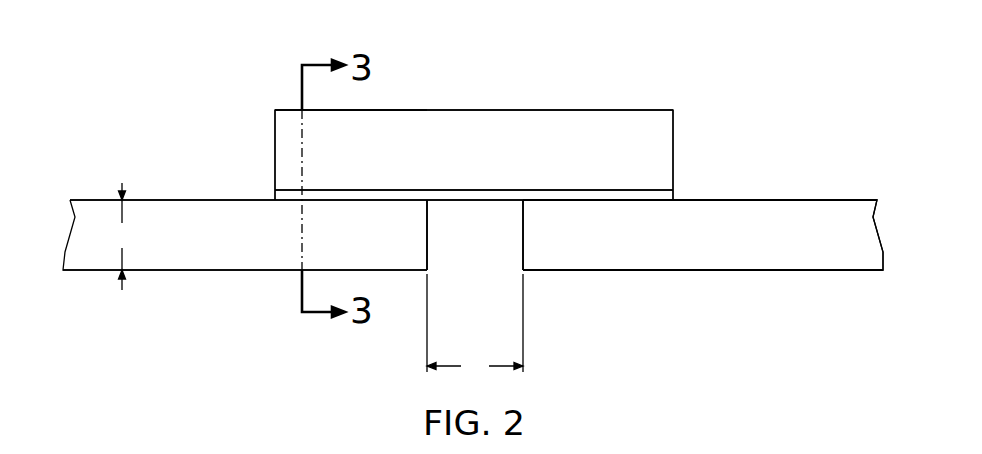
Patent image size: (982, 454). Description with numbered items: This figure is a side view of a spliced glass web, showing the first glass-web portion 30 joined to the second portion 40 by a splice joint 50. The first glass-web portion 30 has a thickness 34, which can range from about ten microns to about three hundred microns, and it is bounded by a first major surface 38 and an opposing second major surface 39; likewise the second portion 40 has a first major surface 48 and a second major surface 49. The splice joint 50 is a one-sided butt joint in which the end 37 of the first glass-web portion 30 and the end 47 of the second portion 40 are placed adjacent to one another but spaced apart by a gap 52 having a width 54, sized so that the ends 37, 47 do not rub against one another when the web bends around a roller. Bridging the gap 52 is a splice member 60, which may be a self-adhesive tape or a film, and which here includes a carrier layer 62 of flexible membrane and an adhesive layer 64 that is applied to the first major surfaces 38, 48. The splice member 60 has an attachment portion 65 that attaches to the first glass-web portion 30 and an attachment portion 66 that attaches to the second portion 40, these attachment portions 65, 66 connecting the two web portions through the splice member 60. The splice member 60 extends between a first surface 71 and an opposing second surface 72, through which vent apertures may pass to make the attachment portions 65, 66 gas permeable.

The first glass-web portion 30 is at (90, 200).
The thickness 34 is at (123, 236).
The end 37 is at (428, 246).
The first major surface 38 is at (163, 200).
The second major surface 39 is at (181, 272).
The second portion 40 is at (696, 265).
The end 47 is at (522, 230).
The first major surface 48 is at (783, 200).
The second major surface 49 is at (800, 274).
The splice joint 50 is at (651, 324).
The gap 52 is at (497, 253).
The width 54 is at (475, 327).
The splice member 60 is at (518, 110).
The carrier layer 62 is at (473, 113).
The adhesive layer 64 is at (551, 190).
The attachment portion 65 is at (277, 140).
The attachment portion 66 is at (672, 152).
The first surface 71 is at (380, 110).
The second surface 72 is at (627, 203).